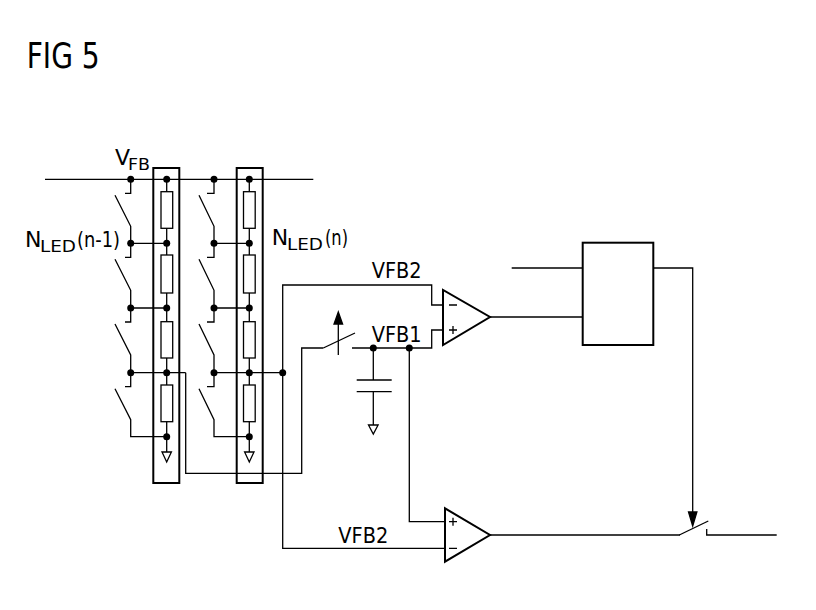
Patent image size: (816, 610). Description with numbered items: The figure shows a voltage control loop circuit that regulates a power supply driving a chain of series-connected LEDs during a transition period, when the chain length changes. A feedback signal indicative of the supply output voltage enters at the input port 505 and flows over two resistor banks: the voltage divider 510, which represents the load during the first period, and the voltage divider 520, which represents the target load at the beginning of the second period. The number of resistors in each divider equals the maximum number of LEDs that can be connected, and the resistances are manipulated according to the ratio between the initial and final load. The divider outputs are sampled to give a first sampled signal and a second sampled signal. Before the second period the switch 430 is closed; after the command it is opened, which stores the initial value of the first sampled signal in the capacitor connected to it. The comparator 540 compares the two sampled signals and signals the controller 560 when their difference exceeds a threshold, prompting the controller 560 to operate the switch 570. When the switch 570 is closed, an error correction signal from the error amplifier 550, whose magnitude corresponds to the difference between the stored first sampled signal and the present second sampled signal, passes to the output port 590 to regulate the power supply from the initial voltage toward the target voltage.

The input port 505 is at (89, 178).
The voltage divider 510 is at (165, 485).
The voltage divider 520 is at (249, 485).
The switch 430 is at (330, 336).
The comparator 540 is at (468, 300).
The error amplifier 550 is at (467, 517).
The controller 560 is at (617, 242).
The switch 570 is at (685, 530).
The output port 590 is at (738, 533).